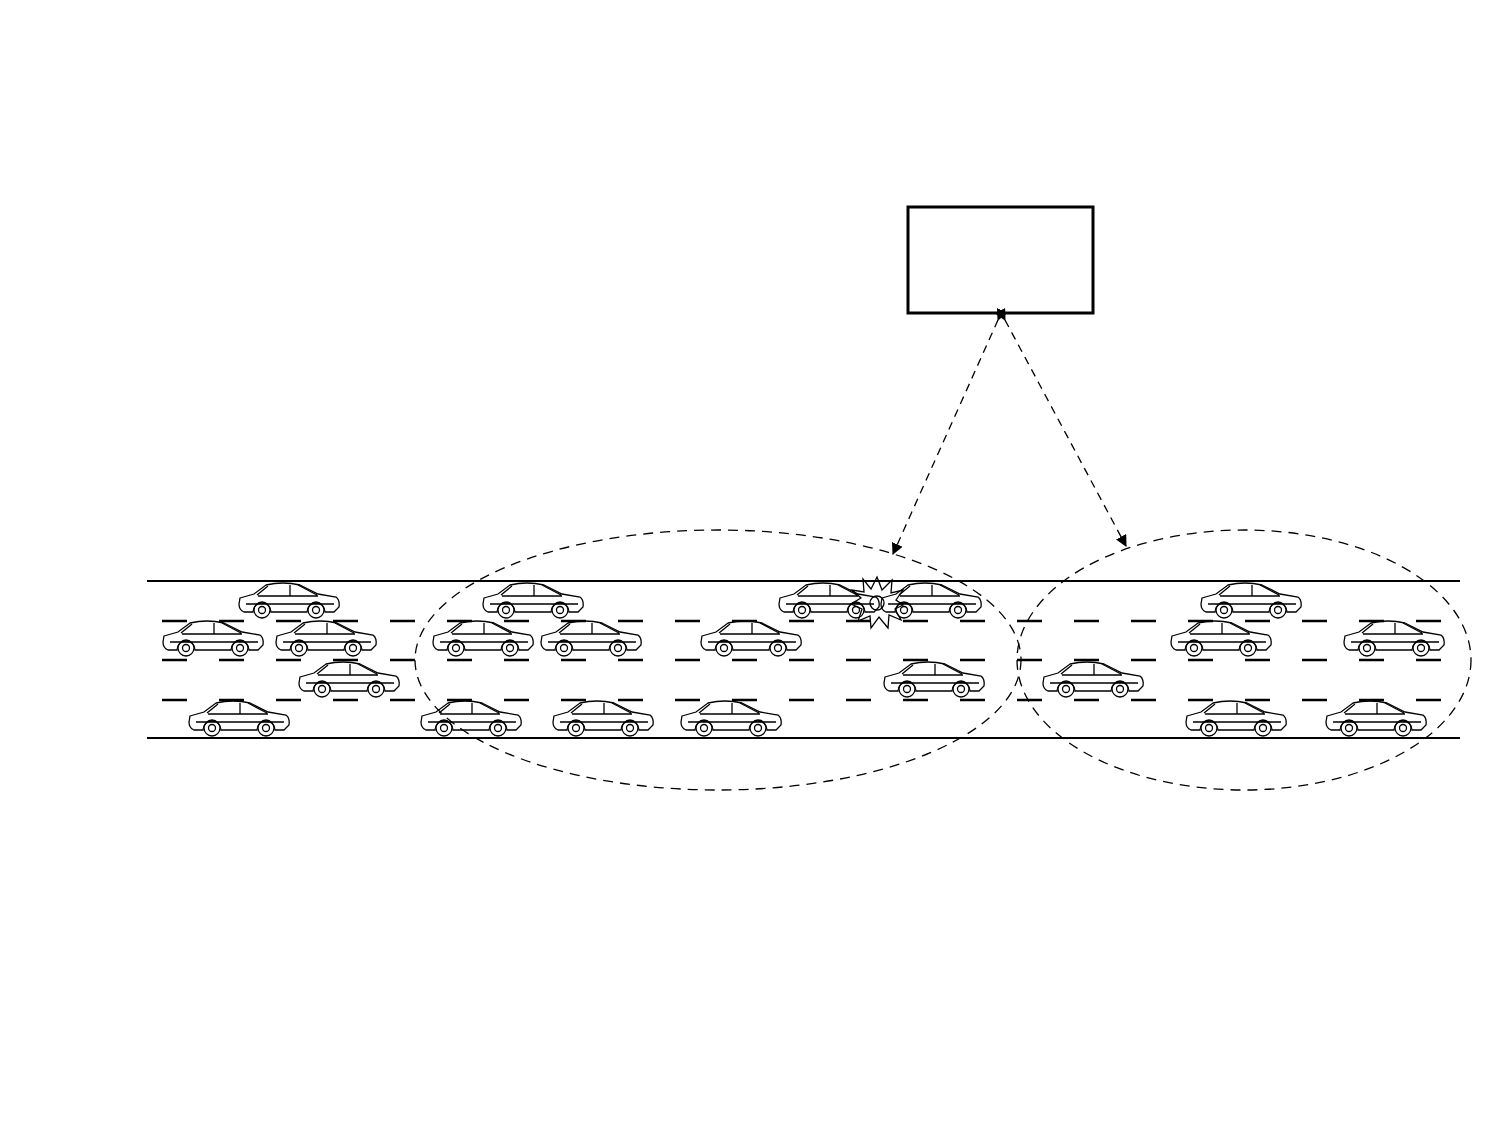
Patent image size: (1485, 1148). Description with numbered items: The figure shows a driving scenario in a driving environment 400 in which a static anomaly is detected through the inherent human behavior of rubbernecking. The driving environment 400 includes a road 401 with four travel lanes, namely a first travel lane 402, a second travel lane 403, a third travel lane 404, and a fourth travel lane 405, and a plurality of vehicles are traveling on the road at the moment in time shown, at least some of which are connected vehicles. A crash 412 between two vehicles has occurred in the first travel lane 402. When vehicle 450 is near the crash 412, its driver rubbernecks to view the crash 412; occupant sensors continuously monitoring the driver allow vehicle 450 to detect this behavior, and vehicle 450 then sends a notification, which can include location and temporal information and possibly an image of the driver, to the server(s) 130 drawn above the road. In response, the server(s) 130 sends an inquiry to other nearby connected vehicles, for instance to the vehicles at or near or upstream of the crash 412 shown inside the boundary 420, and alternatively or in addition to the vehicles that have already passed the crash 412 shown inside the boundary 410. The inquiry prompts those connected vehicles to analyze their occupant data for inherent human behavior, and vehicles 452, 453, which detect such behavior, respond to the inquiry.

The driving environment 400 is at (1302, 143).
The server(s) 130 is at (1093, 258).
The road 401 is at (781, 608).
The first travel lane 402 is at (172, 606).
The second travel lane 403 is at (172, 638).
The third travel lane 404 is at (172, 682).
The fourth travel lane 405 is at (172, 722).
The boundary 410 is at (1358, 548).
The crash 412 is at (876, 568).
The boundary 420 is at (643, 529).
The vehicle 450 is at (940, 695).
The vehicle 452 is at (750, 625).
The vehicle 453 is at (740, 735).